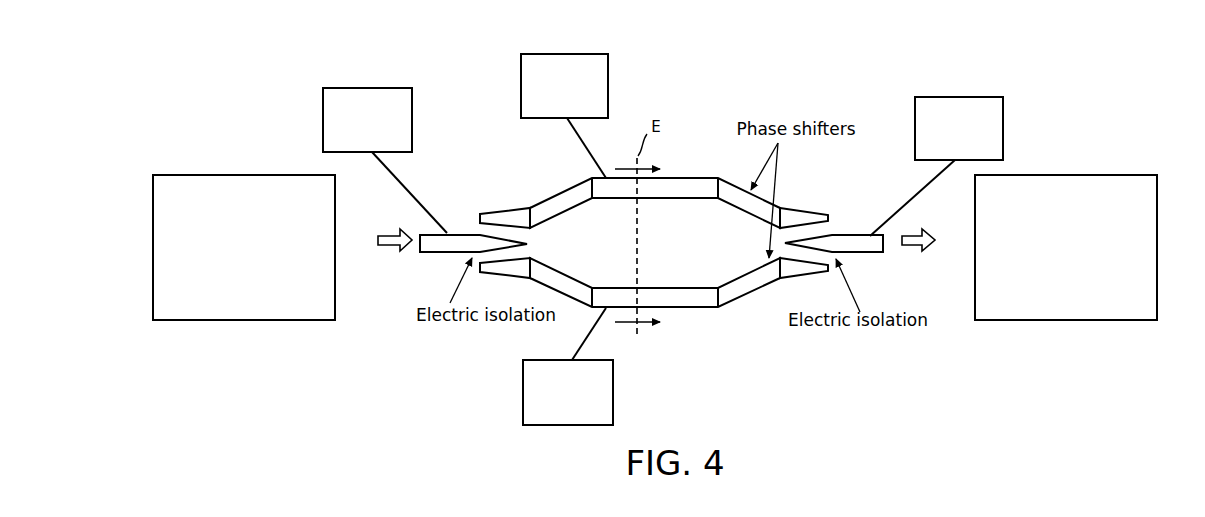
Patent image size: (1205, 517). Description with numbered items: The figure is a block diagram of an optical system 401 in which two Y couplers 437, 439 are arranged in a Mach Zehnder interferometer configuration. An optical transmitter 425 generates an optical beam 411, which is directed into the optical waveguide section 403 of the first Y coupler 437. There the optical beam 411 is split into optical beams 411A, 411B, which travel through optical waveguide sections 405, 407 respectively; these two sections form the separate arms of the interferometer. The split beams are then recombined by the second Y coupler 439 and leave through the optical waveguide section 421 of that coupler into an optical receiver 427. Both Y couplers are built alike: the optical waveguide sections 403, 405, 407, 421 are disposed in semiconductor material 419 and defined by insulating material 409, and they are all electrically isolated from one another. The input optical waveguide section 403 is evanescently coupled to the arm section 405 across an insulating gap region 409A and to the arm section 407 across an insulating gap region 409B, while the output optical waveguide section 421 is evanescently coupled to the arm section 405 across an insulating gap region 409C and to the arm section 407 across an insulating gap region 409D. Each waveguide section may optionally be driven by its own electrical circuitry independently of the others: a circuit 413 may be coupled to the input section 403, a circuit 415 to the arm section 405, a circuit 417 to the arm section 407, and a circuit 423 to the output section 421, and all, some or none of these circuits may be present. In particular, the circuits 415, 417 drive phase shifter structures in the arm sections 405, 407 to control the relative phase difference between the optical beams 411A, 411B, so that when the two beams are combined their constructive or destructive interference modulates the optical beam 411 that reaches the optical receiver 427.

The optical system 401 is at (832, 45).
The optical waveguide section 403 is at (451, 232).
The optical waveguide section 405 is at (569, 186).
The optical waveguide section 407 is at (688, 310).
The insulating material 409 is at (724, 93).
The insulating gap region 409A is at (529, 231).
The insulating gap region 409B is at (530, 248).
The insulating gap region 409C is at (778, 237).
The insulating gap region 409D is at (779, 255).
The optical beam 411 is at (390, 232).
The optical beam 411A is at (633, 161).
The optical beam 411B is at (620, 325).
The circuit 413 is at (359, 88).
The circuit 415 is at (551, 54).
The circuit 417 is at (540, 425).
The semiconductor material 419 is at (455, 255).
The optical waveguide section 421 is at (865, 254).
The circuit 423 is at (950, 97).
The optical transmitter 425 is at (253, 320).
The optical receiver 427 is at (1075, 320).
The Y coupler 437 is at (508, 195).
The Y coupler 439 is at (815, 200).